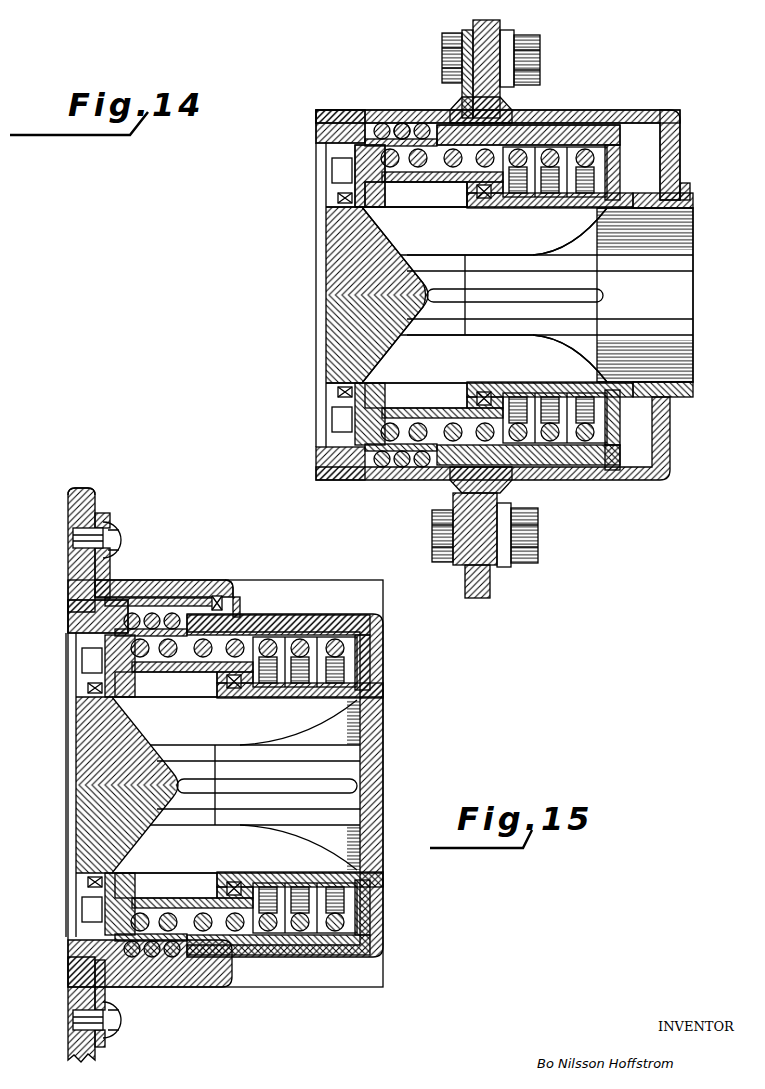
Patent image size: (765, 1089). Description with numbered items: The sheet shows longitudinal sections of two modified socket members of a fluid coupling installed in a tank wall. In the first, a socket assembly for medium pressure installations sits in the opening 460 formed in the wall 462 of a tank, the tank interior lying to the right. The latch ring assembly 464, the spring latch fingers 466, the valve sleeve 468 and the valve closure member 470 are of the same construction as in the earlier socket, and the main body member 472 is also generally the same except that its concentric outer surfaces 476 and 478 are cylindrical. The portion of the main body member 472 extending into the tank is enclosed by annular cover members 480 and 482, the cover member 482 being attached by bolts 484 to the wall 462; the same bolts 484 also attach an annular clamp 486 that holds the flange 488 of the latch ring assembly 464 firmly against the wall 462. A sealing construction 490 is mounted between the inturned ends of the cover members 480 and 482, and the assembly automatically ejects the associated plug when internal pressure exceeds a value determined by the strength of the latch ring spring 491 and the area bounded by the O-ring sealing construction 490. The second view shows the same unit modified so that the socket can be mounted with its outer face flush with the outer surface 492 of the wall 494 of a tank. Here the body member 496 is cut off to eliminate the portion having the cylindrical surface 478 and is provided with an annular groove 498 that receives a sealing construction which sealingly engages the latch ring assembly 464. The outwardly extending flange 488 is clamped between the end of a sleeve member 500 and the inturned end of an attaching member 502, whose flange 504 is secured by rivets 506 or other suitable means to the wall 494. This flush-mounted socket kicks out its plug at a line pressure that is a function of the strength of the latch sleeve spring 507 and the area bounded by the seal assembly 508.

In FIG. 14, the opening 460 is at (447, 470).
In FIG. 14, the wall 462 is at (468, 577).
In FIG. 14, the latch ring assembly 464 is at (381, 110).
In FIG. 15, the latch ring assembly 464 is at (148, 600).
In FIG. 14, the spring latch fingers 466 is at (438, 148).
In FIG. 14, the valve sleeve 468 is at (392, 184).
In FIG. 14, the valve closure member 470 is at (328, 288).
In FIG. 14, the main body member 472 is at (695, 228).
In FIG. 14, the outer surface 476 is at (538, 128).
In FIG. 14, the outer surface 478 is at (650, 200).
In FIG. 14, the cover member 480 is at (595, 117).
In FIG. 14, the cover member 482 is at (677, 143).
In FIG. 14, the bolts 484 is at (515, 42).
In FIG. 14, the annular clamp 486 is at (473, 22).
In FIG. 14, the flange 488 is at (452, 107).
In FIG. 15, the flange 488 is at (218, 594).
In FIG. 14, the sealing construction 490 is at (690, 193).
In FIG. 14, the latch ring spring 491 is at (413, 124).
In FIG. 15, the outer surface 492 is at (70, 573).
In FIG. 15, the wall 494 is at (80, 488).
In FIG. 15, the body member 496 is at (312, 602).
In FIG. 15, the annular groove 498 is at (240, 614).
In FIG. 15, the sleeve member 500 is at (188, 580).
In FIG. 15, the attaching member 502 is at (205, 585).
In FIG. 15, the flange 504 is at (103, 514).
In FIG. 15, the rivets 506 is at (118, 532).
In FIG. 15, the latch sleeve spring 507 is at (163, 598).
In FIG. 15, the seal assembly 508 is at (235, 597).